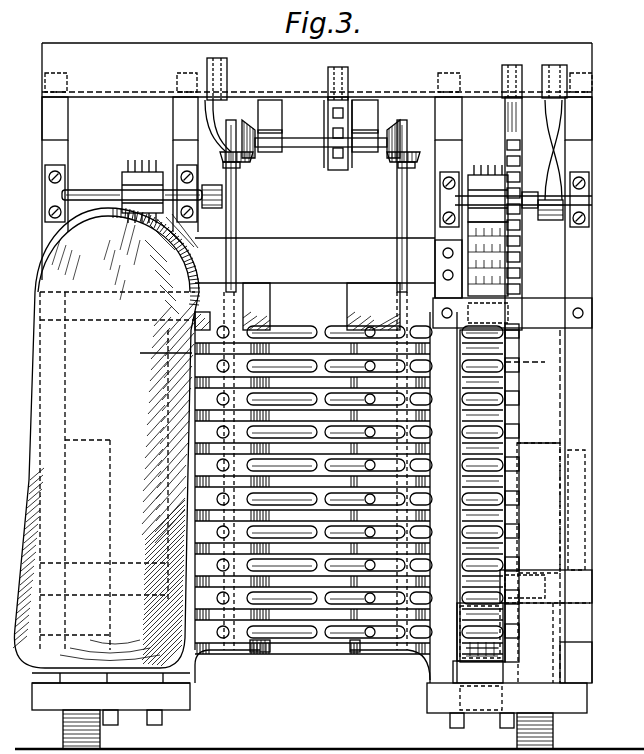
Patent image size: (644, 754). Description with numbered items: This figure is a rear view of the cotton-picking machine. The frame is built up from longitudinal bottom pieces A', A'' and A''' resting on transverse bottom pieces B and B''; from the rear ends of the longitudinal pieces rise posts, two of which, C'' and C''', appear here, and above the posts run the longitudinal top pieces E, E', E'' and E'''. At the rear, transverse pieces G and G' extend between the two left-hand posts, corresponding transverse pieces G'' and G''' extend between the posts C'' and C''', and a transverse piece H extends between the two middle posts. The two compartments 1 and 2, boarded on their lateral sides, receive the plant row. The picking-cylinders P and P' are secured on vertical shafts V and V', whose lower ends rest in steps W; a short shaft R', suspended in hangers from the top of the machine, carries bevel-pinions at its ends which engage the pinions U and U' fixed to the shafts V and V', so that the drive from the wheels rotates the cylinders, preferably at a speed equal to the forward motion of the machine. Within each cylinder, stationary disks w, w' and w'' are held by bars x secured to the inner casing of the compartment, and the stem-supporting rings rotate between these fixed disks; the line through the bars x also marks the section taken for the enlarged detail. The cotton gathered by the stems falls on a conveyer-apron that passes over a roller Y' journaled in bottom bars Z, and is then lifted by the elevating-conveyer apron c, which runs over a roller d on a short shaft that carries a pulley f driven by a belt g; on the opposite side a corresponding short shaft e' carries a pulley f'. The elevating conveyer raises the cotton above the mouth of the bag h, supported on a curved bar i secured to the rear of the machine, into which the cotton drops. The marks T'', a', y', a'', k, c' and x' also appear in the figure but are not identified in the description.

The compartment 1 is at (29, 215).
The compartment 2 is at (592, 232).
The longitudinal top piece E is at (55, 164).
The longitudinal top piece E' is at (185, 164).
The longitudinal top piece E'' is at (448, 197).
The longitudinal top piece E''' is at (578, 390).
The elevating-conveyer apron c is at (132, 187).
The roller d is at (142, 185).
The curved bar i is at (119, 256).
The belt g is at (218, 142).
The pulley f is at (211, 210).
The bevel-pinion U is at (238, 150).
The bevel-pinion U' is at (410, 150).
The vertical shaft V is at (240, 385).
The vertical shaft V' is at (413, 385).
The short shaft R' is at (321, 135).
The chain wheel T'' is at (337, 145).
The gear wheel a' is at (488, 222).
The short shaft e' is at (529, 190).
The crossed belt y' is at (552, 150).
The pulley f' is at (550, 220).
The transverse piece H is at (328, 268).
The transverse piece G'' is at (512, 313).
The picking-cylinder P is at (240, 306).
The picking-cylinder P' is at (373, 306).
The rods k is at (323, 657).
The disk w is at (357, 630).
The disk w' is at (357, 596).
The disk w'' is at (357, 564).
The step W is at (313, 658).
The chain a'' is at (489, 496).
The post C'' is at (497, 563).
The post C''' is at (571, 506).
The transverse piece G''' is at (546, 586).
The roller Y' is at (497, 656).
The longitudinal bottom piece A' is at (111, 669).
The longitudinal bottom piece A'' is at (323, 666).
The longitudinal bottom piece A''' is at (576, 662).
The transverse bottom piece B is at (111, 696).
The transverse bottom piece B'' is at (507, 698).
The bottom bar Z is at (308, 729).
The bag h is at (106, 438).
The transverse piece G is at (104, 305).
The transverse piece G' is at (106, 581).
The drum edge c' is at (104, 562).
The bar x is at (159, 353).
The section line x' is at (532, 363).